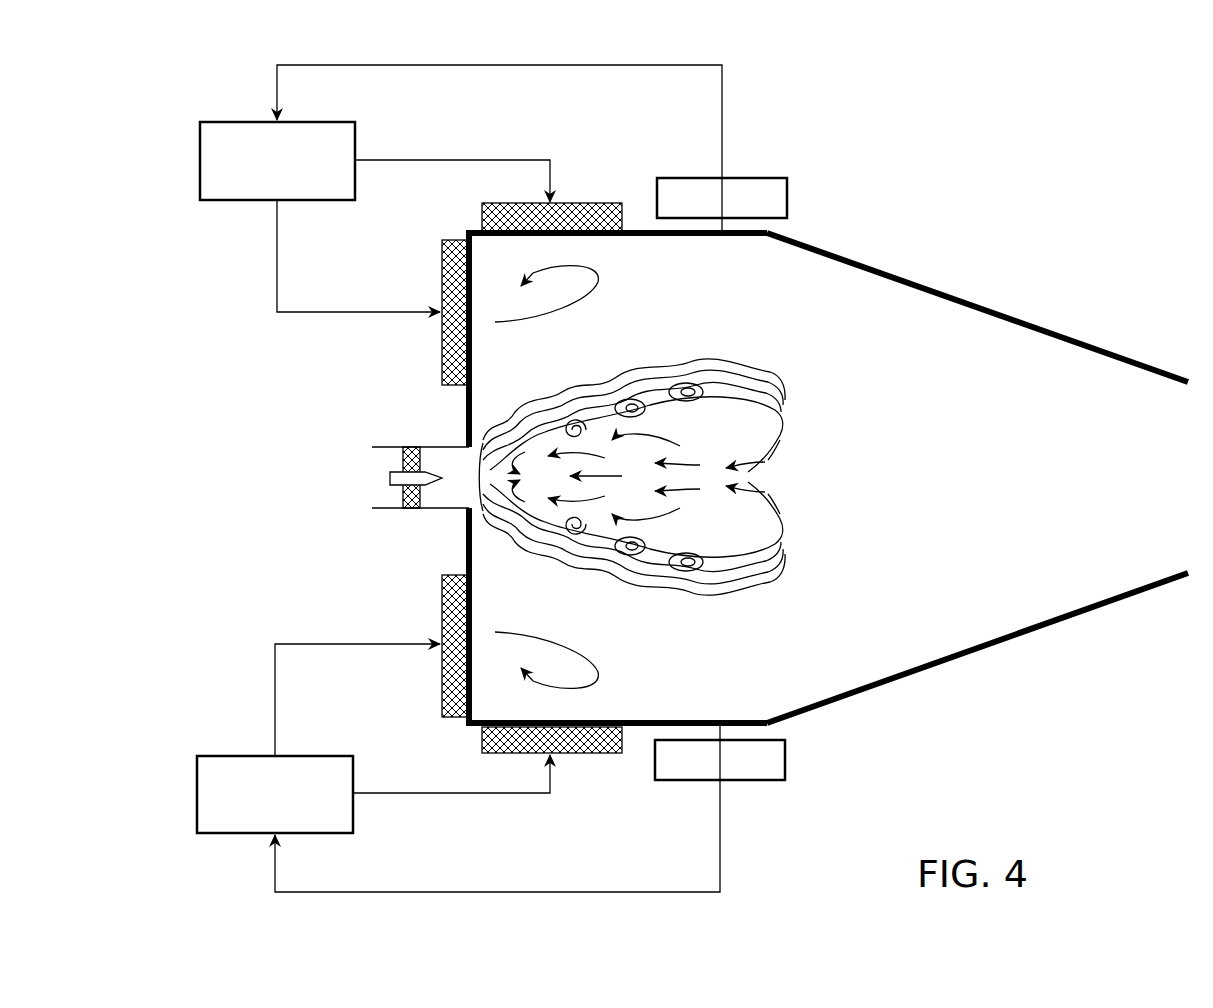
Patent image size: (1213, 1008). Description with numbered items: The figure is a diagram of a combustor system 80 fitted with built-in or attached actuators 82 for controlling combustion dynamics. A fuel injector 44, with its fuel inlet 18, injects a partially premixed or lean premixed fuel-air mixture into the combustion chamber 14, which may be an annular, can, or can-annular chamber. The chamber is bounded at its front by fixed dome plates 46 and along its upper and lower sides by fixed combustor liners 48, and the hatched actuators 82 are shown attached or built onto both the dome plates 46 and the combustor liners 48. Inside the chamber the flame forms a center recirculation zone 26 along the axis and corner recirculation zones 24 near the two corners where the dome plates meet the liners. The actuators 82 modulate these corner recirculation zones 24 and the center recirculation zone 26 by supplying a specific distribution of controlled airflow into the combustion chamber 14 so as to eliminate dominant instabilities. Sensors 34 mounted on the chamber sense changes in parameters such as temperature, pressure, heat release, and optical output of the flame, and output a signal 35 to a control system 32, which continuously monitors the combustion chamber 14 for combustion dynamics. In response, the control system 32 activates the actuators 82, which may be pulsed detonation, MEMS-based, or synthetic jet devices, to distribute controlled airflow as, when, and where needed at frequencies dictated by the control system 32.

The combustor system 80 is at (1080, 104).
The combustion chamber 14 is at (965, 568).
The combustor liners 48 is at (696, 236).
The dome plates 46 is at (469, 409).
The fuel injector 44 is at (338, 432).
The fuel inlet 18 is at (387, 477).
The actuators 82 is at (442, 282).
The control system 32 is at (218, 200).
The sensors 34 is at (773, 178).
The signal 35 is at (528, 66).
The corner recirculation zones 24 is at (505, 305).
The center recirculation zone 26 is at (722, 438).